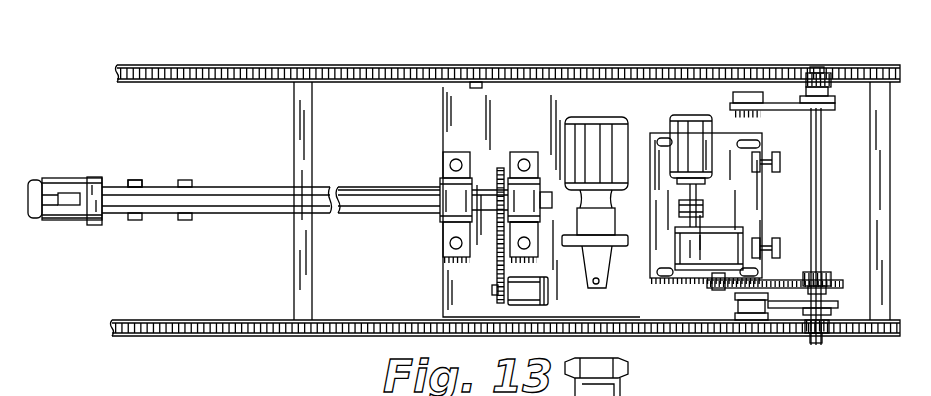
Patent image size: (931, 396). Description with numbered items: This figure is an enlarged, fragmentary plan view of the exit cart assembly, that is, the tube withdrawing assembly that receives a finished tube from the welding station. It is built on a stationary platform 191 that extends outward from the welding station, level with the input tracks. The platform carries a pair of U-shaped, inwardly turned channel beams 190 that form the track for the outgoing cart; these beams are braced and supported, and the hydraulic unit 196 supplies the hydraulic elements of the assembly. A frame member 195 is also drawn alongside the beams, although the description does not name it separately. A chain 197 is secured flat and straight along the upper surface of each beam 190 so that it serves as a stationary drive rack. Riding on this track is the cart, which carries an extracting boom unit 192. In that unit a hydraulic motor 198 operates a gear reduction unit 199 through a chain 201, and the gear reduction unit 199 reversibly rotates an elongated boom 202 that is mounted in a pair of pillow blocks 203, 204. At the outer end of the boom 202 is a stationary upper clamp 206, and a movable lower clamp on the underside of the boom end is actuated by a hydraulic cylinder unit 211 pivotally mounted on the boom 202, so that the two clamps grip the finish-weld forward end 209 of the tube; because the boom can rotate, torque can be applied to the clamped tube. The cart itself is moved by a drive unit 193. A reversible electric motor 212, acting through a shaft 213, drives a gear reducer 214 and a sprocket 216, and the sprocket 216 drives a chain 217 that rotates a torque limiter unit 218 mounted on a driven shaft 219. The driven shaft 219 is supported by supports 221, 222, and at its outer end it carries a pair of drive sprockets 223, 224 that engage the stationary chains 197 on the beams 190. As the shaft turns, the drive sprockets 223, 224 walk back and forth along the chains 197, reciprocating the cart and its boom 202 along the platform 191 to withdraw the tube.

The channel beams 190 is at (390, 86).
The stationary platform 191 is at (201, 349).
The extracting boom unit 192 is at (218, 232).
The drive unit 193 is at (686, 104).
The frame member 195 is at (302, 260).
The hydraulic unit 196 is at (610, 101).
The chain 197 is at (345, 72).
The hydraulic motor 198 is at (533, 292).
The gear reduction unit 199 is at (487, 190).
The chain 201 is at (495, 261).
The elongated boom 202 is at (367, 187).
The pillow block 203 is at (450, 240).
The pillow block 204 is at (538, 250).
The stationary upper clamp 206 is at (73, 198).
The forward end 209 is at (62, 222).
The hydraulic cylinder unit 211 is at (162, 185).
The reversible electric motor 212 is at (698, 125).
The shaft 213 is at (696, 195).
The gear reducer 214 is at (693, 250).
The sprocket 216 is at (721, 290).
The chain 217 is at (782, 288).
The torque limiter unit 218 is at (824, 272).
The driven shaft 219 is at (822, 198).
The support 221 is at (780, 99).
The support 222 is at (788, 308).
The drive sprocket 223 is at (822, 78).
The drive sprocket 224 is at (822, 328).